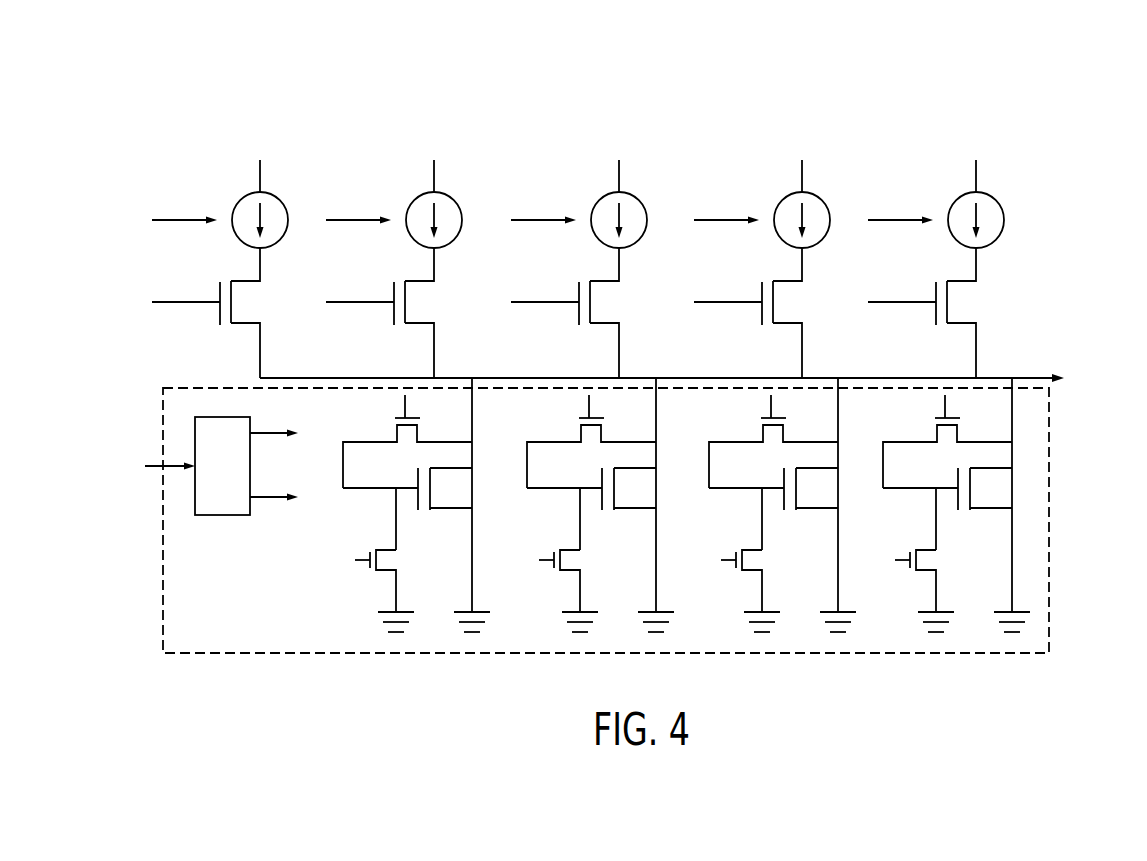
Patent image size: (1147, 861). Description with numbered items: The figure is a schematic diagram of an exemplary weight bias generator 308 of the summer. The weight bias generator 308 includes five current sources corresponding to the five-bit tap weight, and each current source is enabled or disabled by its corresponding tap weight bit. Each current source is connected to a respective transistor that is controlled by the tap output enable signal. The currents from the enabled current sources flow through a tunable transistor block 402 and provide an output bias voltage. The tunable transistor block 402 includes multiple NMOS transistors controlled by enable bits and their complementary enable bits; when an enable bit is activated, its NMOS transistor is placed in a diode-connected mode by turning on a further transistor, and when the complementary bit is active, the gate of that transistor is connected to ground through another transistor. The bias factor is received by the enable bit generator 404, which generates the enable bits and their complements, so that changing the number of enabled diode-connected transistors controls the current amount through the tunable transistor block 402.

The weight bias generator 308 is at (88, 87).
The tunable transistor block 402 is at (203, 640).
The enable bit generator 404 is at (235, 479).